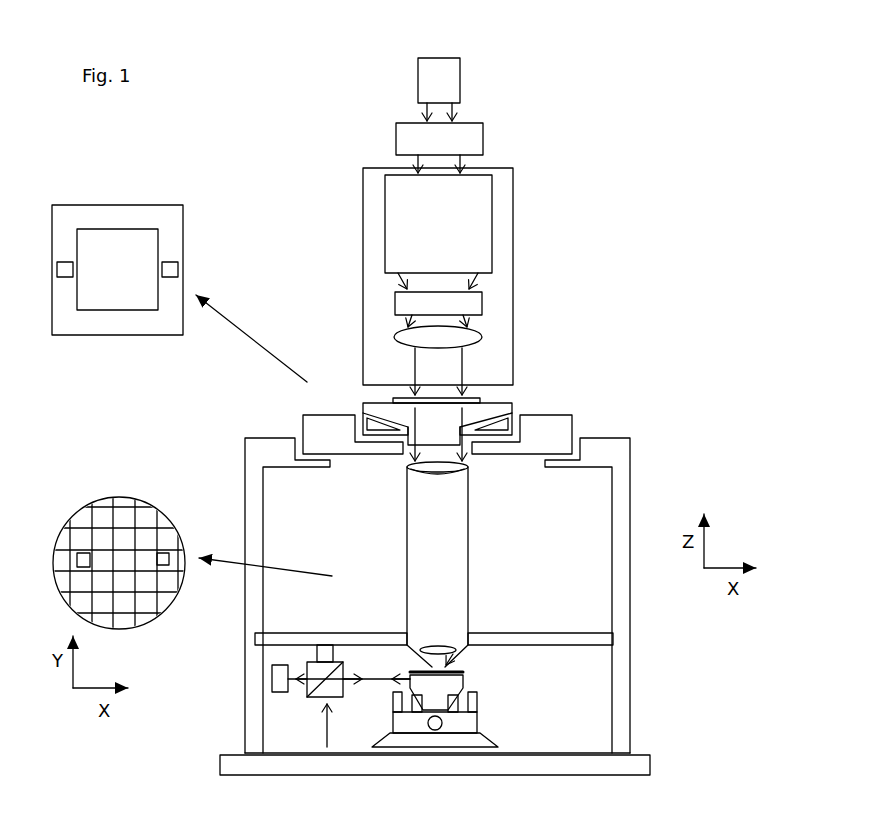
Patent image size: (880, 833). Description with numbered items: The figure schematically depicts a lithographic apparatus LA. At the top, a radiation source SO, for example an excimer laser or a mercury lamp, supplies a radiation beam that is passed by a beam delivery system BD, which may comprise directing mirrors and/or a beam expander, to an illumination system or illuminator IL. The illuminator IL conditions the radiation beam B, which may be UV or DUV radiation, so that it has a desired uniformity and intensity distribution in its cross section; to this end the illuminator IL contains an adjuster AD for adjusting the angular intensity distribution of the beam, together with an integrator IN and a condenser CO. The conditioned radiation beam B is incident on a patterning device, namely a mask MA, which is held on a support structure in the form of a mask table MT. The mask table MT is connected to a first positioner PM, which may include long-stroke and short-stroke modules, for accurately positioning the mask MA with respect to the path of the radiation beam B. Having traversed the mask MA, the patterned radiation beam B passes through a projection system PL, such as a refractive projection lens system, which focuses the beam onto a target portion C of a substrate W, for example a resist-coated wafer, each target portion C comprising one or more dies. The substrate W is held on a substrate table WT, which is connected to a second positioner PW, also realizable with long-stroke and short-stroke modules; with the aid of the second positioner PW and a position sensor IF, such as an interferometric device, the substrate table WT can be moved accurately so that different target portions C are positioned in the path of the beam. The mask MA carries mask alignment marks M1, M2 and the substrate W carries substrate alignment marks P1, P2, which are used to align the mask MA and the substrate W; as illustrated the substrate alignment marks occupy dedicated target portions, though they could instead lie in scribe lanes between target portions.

The radiation source SO is at (460, 84).
The beam delivery system BD is at (483, 141).
The illumination system (illuminator) IL is at (513, 186).
The adjuster AD is at (492, 232).
The integrator IN is at (482, 302).
The condenser CO is at (476, 331).
The radiation beam B is at (440, 393).
The patterning device (mask) MA is at (393, 401).
The mask alignment mark M1 is at (173, 262).
The mask alignment mark M2 is at (62, 261).
The support structure (mask table) MT is at (513, 408).
The first positioner PM is at (303, 415).
The lithographic apparatus LA is at (631, 280).
The projection system PL is at (469, 545).
The substrate W is at (426, 664).
The target portion C is at (126, 548).
The substrate alignment mark P1 is at (84, 553).
The substrate alignment mark P2 is at (163, 553).
The position sensor IF is at (301, 702).
The substrate table (wafer table) WT is at (463, 678).
The second positioner PW is at (477, 727).